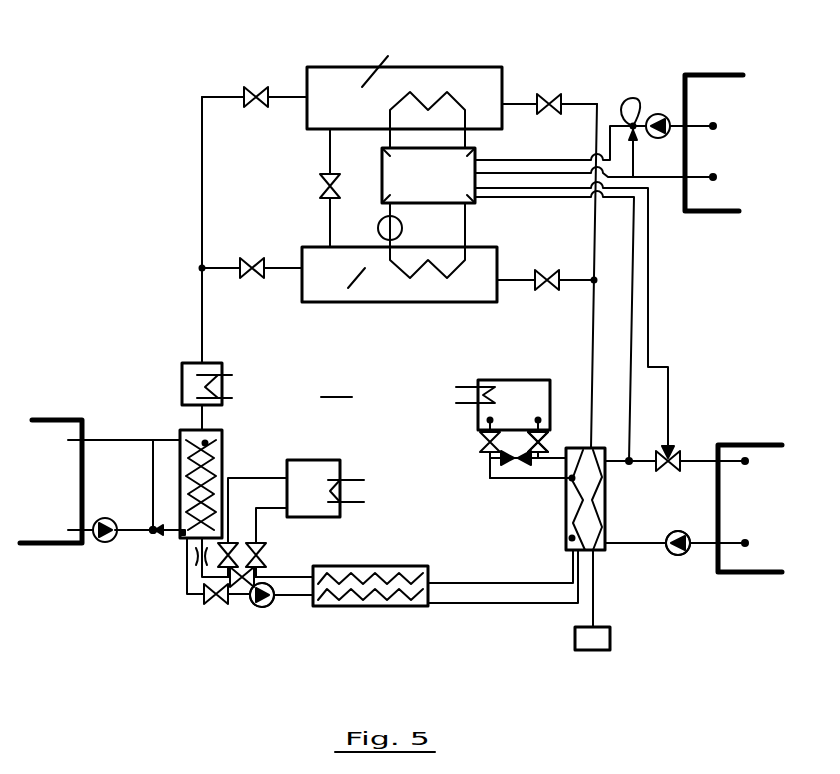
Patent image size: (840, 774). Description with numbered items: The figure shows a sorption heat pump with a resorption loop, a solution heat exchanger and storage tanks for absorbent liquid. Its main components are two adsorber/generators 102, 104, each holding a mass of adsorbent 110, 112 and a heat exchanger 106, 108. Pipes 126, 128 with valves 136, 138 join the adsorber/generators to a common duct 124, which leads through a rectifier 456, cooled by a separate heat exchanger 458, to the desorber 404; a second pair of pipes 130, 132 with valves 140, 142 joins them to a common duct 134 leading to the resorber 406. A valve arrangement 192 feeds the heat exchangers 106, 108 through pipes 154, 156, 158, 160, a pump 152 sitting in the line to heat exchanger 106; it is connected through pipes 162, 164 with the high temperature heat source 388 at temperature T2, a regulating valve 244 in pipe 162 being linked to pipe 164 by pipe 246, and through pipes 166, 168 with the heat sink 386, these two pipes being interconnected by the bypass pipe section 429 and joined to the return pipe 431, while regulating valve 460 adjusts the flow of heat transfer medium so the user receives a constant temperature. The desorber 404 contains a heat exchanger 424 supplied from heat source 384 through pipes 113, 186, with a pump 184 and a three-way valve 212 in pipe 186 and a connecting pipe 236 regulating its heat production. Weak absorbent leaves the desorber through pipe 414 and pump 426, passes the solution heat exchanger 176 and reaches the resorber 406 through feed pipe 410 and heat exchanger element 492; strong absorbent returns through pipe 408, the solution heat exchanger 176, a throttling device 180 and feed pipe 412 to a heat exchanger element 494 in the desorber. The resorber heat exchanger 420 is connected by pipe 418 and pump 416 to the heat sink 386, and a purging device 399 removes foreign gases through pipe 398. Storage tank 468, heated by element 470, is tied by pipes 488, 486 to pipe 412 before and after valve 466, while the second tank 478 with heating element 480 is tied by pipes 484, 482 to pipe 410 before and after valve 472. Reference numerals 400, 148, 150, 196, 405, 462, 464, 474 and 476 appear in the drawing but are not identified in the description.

The adsorber/generator 102 is at (470, 305).
The adsorber/generator 104 is at (433, 67).
The heat exchanger 106 is at (437, 268).
The heat exchanger 108 is at (453, 95).
The mass of adsorbent 110 is at (348, 288).
The mass of adsorbent 112 is at (389, 61).
The pipe 113 is at (97, 440).
The common duct 124 is at (199, 300).
The pipe 126 is at (213, 264).
The pipe 128 is at (212, 92).
The pipe 130 is at (510, 273).
The pipe 132 is at (582, 102).
The common duct 134 is at (592, 340).
The valve 136 is at (264, 258).
The valve 138 is at (246, 85).
The valve 140 is at (540, 268).
The valve 142 is at (556, 97).
The connecting line 148 is at (327, 170).
The valve 150 is at (318, 193).
The pump 152 is at (378, 228).
The pipe 154 is at (381, 201).
The pipe 156 is at (385, 152).
The pipe 158 is at (480, 150).
The pipe 160 is at (477, 204).
The pipe 162 is at (518, 160).
The pipe 164 is at (538, 173).
The pipe 166 is at (647, 330).
The pipe 168 is at (634, 312).
The solution heat exchanger 176 is at (352, 566).
The throttling device 180 is at (185, 588).
The pump 184 is at (96, 540).
The pipe 186 is at (151, 531).
The valve arrangement 192 is at (428, 175).
The pump 196 is at (656, 114).
The three-way valve 212 is at (151, 528).
The pipe 236 is at (152, 458).
The regulating valve 244 is at (636, 102).
The pipe 246 is at (635, 172).
The heat source 384 is at (51, 481).
The heat sink (user) 386 is at (750, 508).
The high temperature heat source 388 is at (714, 143).
The high temperature T2 is at (715, 103).
The pipe 398 is at (595, 602).
The purging device 399 is at (597, 652).
The system 400 is at (336, 386).
The desorber 404 is at (223, 432).
The restrictor 405 is at (202, 517).
The resorber 406 is at (563, 522).
The pipe 408 is at (457, 583).
The pipe 410 is at (482, 603).
The feed pipe 412 is at (316, 572).
The pipe 414 is at (297, 597).
The pump 416 is at (683, 556).
The pipe 418 is at (647, 540).
The heat exchanger 420 is at (600, 530).
The heat exchanger 424 is at (207, 443).
The pump 426 is at (267, 607).
The pipe section 429 is at (647, 463).
The pipe 431 is at (693, 463).
The rectifier 456 is at (222, 365).
The heat exchanger 458 is at (218, 396).
The regulating valve 460 is at (672, 458).
The valve 462 is at (255, 580).
The line 464 is at (197, 598).
The valve 466 is at (234, 585).
The storage tank 468 is at (333, 461).
The heat exchanger element 470 is at (351, 492).
The valve 472 is at (226, 600).
The check valve 474 is at (487, 455).
The valve 476 is at (545, 448).
The second storage tank 478 is at (551, 406).
The heat exchanger element 480 is at (458, 390).
The pipe 482 is at (545, 423).
The pipe 484 is at (485, 435).
The pipe 486 is at (256, 509).
The pipe 488 is at (258, 528).
The heat exchanger element 492 is at (562, 478).
The heat exchanger element 494 is at (220, 469).